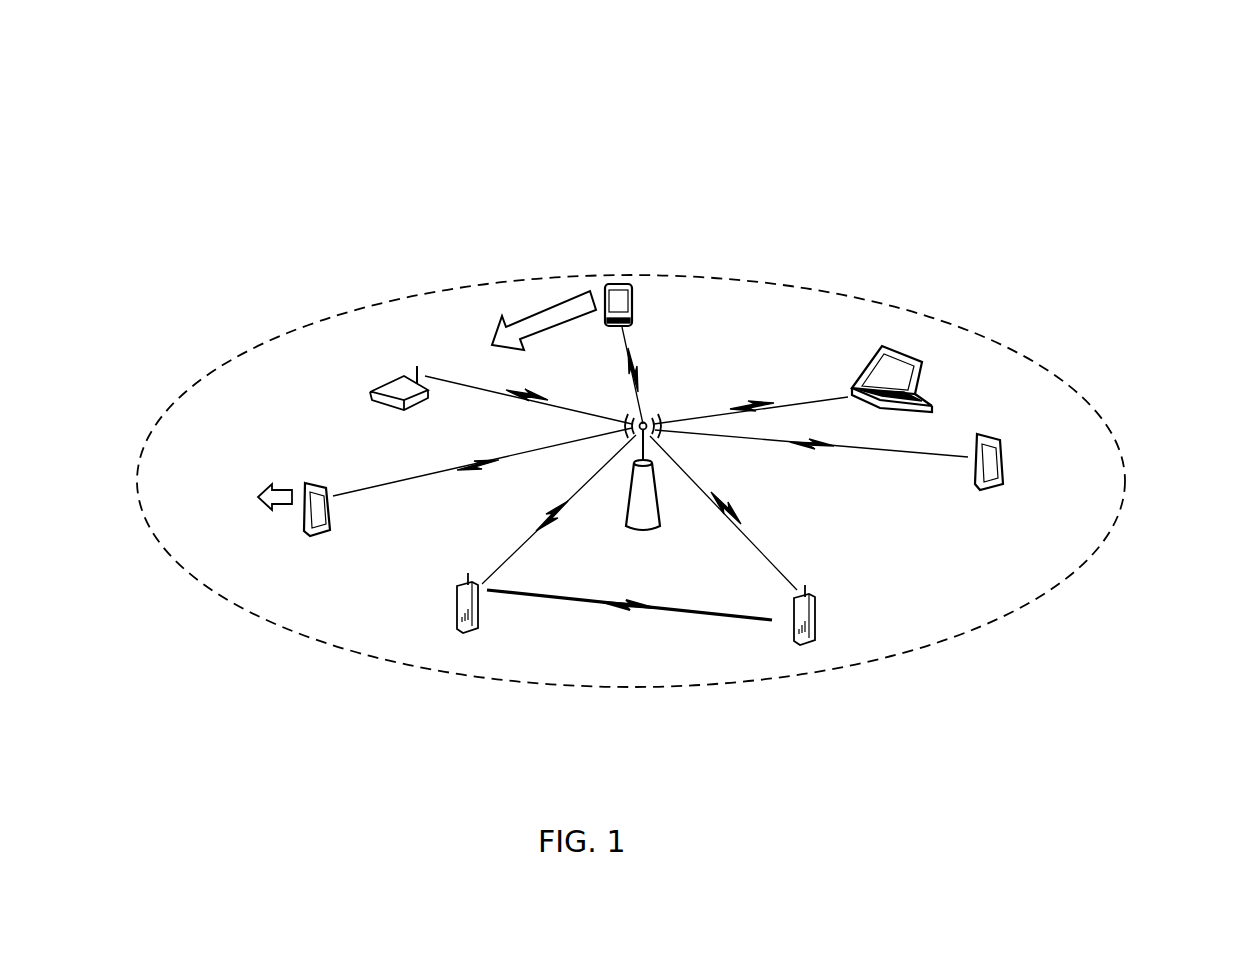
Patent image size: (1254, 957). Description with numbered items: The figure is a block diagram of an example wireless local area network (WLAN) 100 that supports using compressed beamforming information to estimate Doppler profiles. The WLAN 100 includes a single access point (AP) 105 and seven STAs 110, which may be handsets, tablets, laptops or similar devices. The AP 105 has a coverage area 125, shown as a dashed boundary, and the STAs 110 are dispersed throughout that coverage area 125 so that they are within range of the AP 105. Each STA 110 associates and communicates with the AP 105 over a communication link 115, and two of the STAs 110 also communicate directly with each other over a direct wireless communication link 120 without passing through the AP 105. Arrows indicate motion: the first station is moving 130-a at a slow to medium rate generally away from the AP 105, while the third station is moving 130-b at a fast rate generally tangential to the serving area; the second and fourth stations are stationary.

The wireless local area network (WLAN) 100 is at (1175, 78).
The access point (AP) 105 is at (650, 532).
The STA (station) 110 is at (636, 320).
The communication link 115 is at (556, 403).
The direct wireless communication link 120 is at (614, 610).
The coverage area 125 is at (884, 303).
The moving (of STA-1) 130-a is at (283, 488).
The moving (of STA-3) 130-b is at (552, 308).